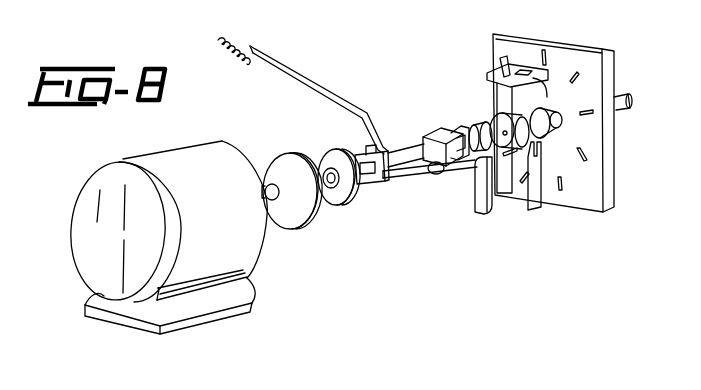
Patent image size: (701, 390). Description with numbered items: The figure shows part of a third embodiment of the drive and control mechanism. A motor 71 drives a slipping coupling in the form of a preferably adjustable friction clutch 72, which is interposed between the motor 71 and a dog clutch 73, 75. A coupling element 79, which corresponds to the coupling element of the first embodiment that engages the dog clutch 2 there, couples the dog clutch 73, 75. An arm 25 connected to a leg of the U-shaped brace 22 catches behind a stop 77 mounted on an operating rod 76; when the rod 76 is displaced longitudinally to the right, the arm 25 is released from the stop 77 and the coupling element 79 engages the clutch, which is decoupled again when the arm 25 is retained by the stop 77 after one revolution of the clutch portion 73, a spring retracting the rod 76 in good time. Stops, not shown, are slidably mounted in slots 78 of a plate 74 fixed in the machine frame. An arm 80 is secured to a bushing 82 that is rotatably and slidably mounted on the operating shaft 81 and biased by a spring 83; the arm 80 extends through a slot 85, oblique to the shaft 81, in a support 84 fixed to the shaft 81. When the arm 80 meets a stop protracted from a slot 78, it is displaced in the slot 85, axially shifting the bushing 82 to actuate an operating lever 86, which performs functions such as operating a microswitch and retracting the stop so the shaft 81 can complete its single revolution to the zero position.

The motor 71 is at (94, 197).
The friction clutch 72 is at (297, 226).
The dog clutch portion 75 is at (330, 158).
The dog clutch portion 73 is at (373, 150).
The dog clutch 2 is at (352, 200).
The coupling element 79 is at (395, 183).
The U-shaped brace 22 is at (433, 138).
The stop 77 is at (462, 128).
The arm 25 is at (467, 172).
The operating rod 76 is at (483, 198).
The support 84 is at (502, 95).
The arm 80 is at (497, 63).
The slot 85 is at (522, 72).
The spring 83 is at (537, 126).
The bushing 82 is at (545, 112).
The operating shaft 81 is at (555, 118).
The operating lever 86 is at (538, 211).
The plate 74 is at (610, 151).
The slots 78 is at (578, 152).